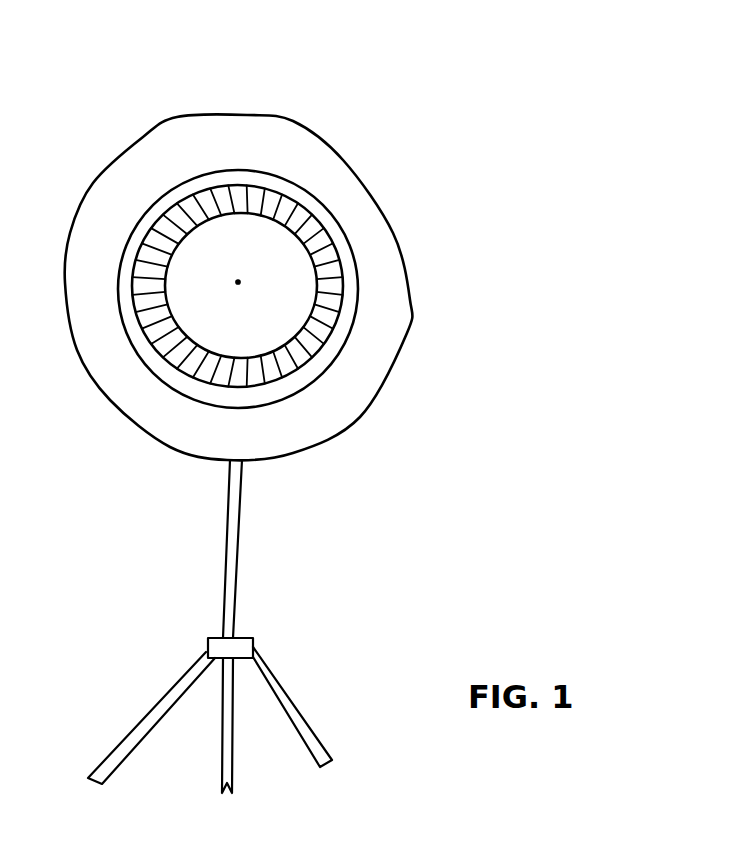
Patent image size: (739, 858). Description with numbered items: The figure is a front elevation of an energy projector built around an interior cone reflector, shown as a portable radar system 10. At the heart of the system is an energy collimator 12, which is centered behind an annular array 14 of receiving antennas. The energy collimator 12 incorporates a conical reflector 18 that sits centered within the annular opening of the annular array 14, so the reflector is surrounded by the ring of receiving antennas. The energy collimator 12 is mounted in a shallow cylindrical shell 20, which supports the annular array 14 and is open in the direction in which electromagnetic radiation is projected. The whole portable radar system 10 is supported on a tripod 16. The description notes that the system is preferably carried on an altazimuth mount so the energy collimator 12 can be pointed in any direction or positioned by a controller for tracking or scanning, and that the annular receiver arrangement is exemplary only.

The portable radar system 10 is at (473, 72).
The energy collimator 12 is at (327, 257).
The annular array of receiving antennas 14 is at (228, 145).
The tripod 16 is at (238, 562).
The conical reflector 18 is at (205, 310).
The shallow cylindrical shell 20 is at (305, 212).